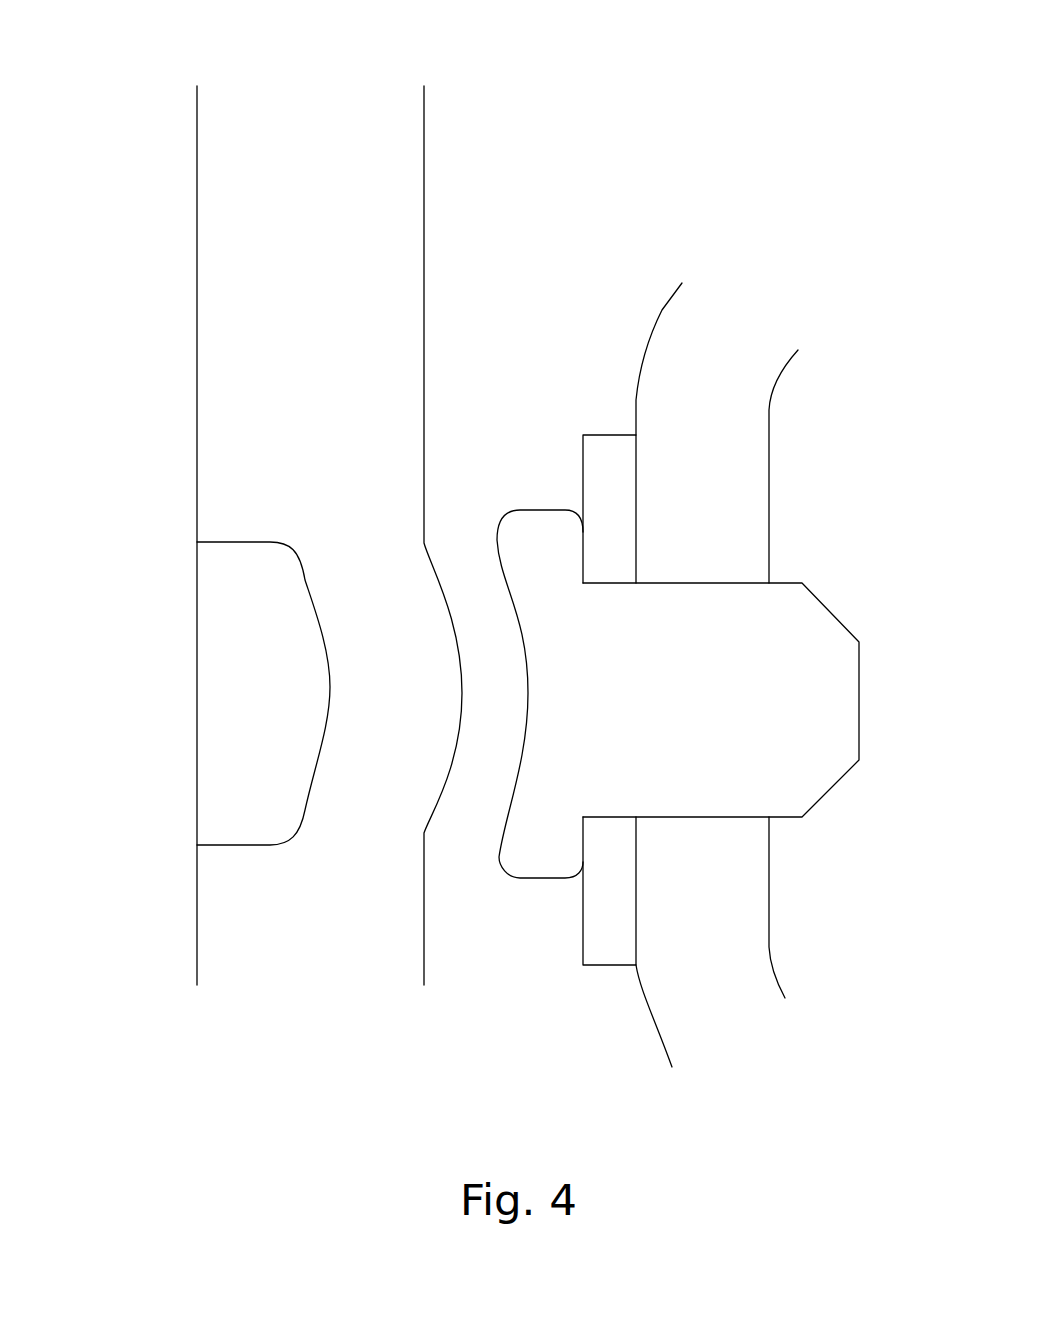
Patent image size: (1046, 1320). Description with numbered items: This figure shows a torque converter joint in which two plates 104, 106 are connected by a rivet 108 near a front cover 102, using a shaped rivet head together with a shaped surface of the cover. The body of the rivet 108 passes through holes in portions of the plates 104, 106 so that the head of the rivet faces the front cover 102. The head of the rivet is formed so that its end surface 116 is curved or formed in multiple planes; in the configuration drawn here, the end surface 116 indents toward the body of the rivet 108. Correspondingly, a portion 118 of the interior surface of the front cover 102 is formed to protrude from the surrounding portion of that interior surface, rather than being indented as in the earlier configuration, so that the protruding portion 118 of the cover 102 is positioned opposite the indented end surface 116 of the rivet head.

The front cover 102 is at (186, 262).
The plate 104 is at (618, 435).
The plate 106 is at (662, 310).
The rivet 108 is at (698, 832).
The end surface 116 is at (520, 772).
The portion 118 is at (448, 605).